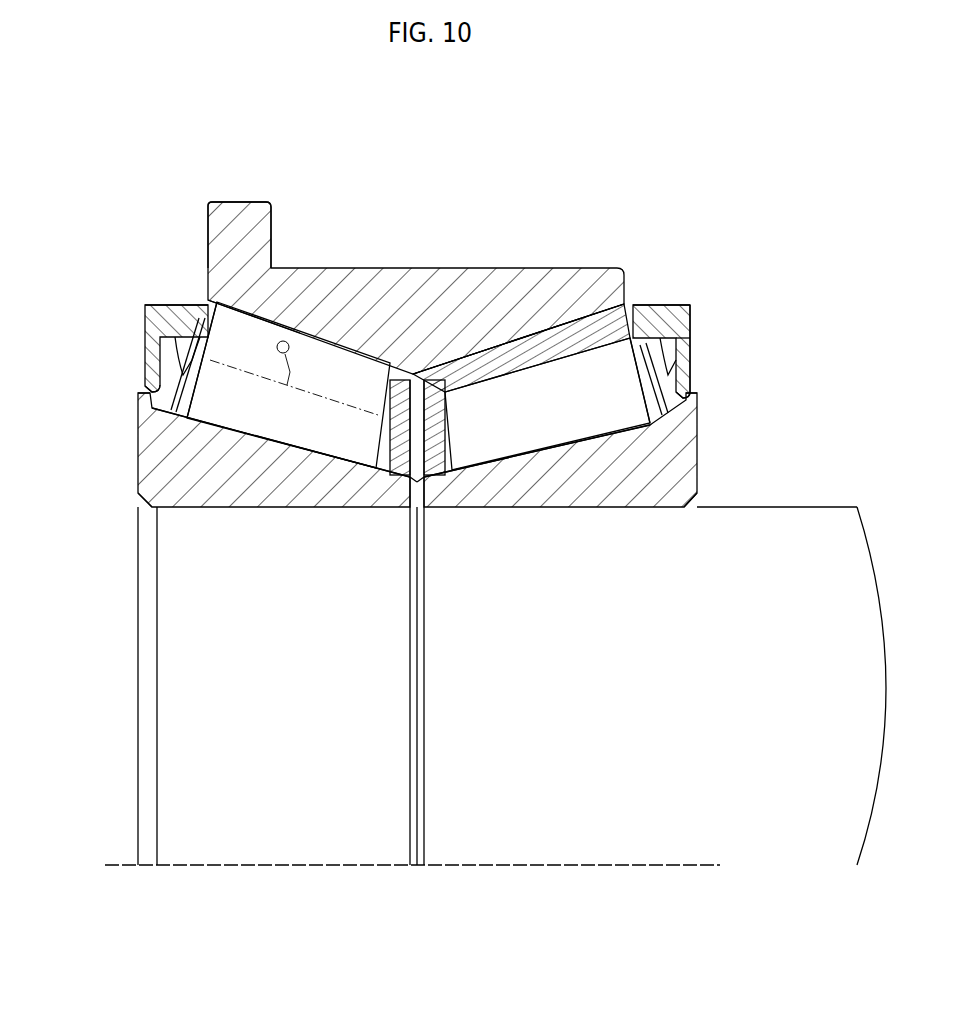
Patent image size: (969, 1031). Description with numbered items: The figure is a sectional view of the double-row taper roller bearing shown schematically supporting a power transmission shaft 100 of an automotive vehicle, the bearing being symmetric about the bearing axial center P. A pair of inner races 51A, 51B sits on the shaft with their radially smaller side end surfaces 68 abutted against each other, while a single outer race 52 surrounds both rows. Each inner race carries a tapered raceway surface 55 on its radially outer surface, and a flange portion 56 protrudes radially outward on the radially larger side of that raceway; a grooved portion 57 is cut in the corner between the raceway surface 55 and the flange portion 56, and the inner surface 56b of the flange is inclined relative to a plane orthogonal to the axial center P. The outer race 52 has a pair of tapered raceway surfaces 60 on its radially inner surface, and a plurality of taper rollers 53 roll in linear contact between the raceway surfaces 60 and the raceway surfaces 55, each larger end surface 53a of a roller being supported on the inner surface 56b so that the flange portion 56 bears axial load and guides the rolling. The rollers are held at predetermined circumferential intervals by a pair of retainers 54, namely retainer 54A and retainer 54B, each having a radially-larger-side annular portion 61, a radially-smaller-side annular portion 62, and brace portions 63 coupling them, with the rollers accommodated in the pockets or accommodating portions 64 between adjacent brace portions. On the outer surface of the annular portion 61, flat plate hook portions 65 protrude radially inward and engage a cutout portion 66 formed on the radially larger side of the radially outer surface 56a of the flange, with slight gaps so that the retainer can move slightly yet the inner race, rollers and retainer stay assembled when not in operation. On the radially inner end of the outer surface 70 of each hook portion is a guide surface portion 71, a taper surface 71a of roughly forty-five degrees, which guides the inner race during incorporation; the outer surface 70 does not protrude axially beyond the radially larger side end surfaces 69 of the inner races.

The inner race 51A is at (265, 515).
The inner race 51B is at (567, 515).
The outer race 52 is at (574, 264).
The taper rollers 53 is at (334, 447).
The larger end surface 53a is at (196, 382).
The retainers 54 is at (423, 314).
The retainer 54A is at (165, 292).
The retainer 54B is at (671, 292).
The raceway surface 55 is at (288, 437).
The flange portion 56 is at (146, 358).
The radially outer surface 56a is at (145, 318).
The inner surface 56b is at (224, 427).
The grooved portion 57 is at (188, 420).
The raceway surfaces 60 is at (339, 322).
The radially-larger-side annular portion 61 is at (240, 202).
The radially-smaller-side annular portion 62 is at (391, 378).
The brace portions 63 is at (545, 330).
The accommodating portions 64 is at (295, 293).
The hook portions 65 is at (700, 356).
The cutout portion 66 is at (726, 430).
The radially smaller side end surfaces 68 is at (398, 508).
The radially larger side end surfaces 69 is at (138, 458).
The outer surface 70 is at (695, 330).
The guide surface portion 71 is at (415, 385).
The taper surface 71a is at (152, 389).
The power transmission shaft 100 is at (800, 530).
The bearing axial center P is at (712, 865).